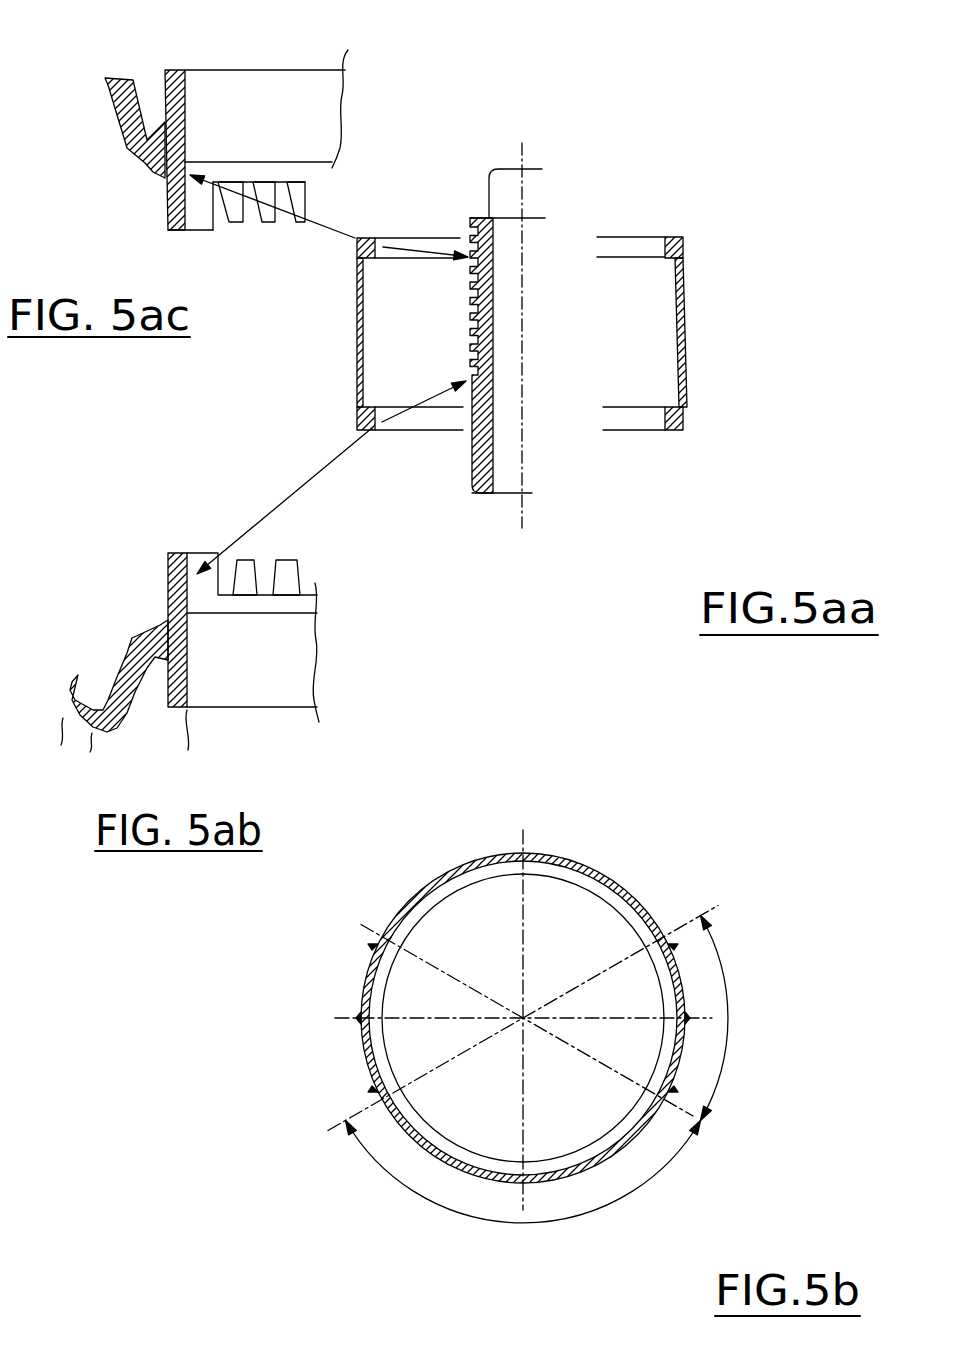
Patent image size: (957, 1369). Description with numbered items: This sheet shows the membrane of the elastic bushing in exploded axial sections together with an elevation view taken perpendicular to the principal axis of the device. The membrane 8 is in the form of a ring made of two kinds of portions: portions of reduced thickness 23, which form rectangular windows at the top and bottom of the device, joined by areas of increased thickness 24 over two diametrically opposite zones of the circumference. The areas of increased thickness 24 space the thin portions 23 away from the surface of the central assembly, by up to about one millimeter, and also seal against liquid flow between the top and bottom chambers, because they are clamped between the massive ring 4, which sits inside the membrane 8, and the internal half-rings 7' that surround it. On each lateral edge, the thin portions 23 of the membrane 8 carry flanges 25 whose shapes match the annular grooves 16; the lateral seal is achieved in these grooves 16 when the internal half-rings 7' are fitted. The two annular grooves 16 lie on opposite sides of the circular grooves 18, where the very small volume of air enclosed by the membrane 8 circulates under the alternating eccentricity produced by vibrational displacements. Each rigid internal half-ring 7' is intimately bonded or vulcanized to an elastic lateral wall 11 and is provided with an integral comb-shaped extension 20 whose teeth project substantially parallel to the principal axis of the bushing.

In FIG. 5aa, the massive ring 4 is at (482, 218).
In FIG. 5ac, the internal half-ring 7' is at (256, 117).
In FIG. 5ab, the internal half-ring 7' is at (243, 675).
In FIG. 5aa, the membrane 8 is at (683, 430).
In FIG. 5b, the membrane 8 is at (630, 883).
In FIG. 5ac, the elastic lateral wall 11 is at (123, 148).
In FIG. 5ab, the elastic lateral wall 11 is at (95, 740).
In FIG. 5aa, the annular groove 16 is at (493, 255).
In FIG. 5aa, the circular groove 18 is at (493, 307).
In FIG. 5ac, the comb-shaped extension 20 is at (237, 248).
In FIG. 5b, the portion of reduced thickness 23 is at (523, 1195).
In FIG. 5b, the area of increased thickness 24 is at (734, 1018).
In FIG. 5aa, the flange 25 is at (366, 238).